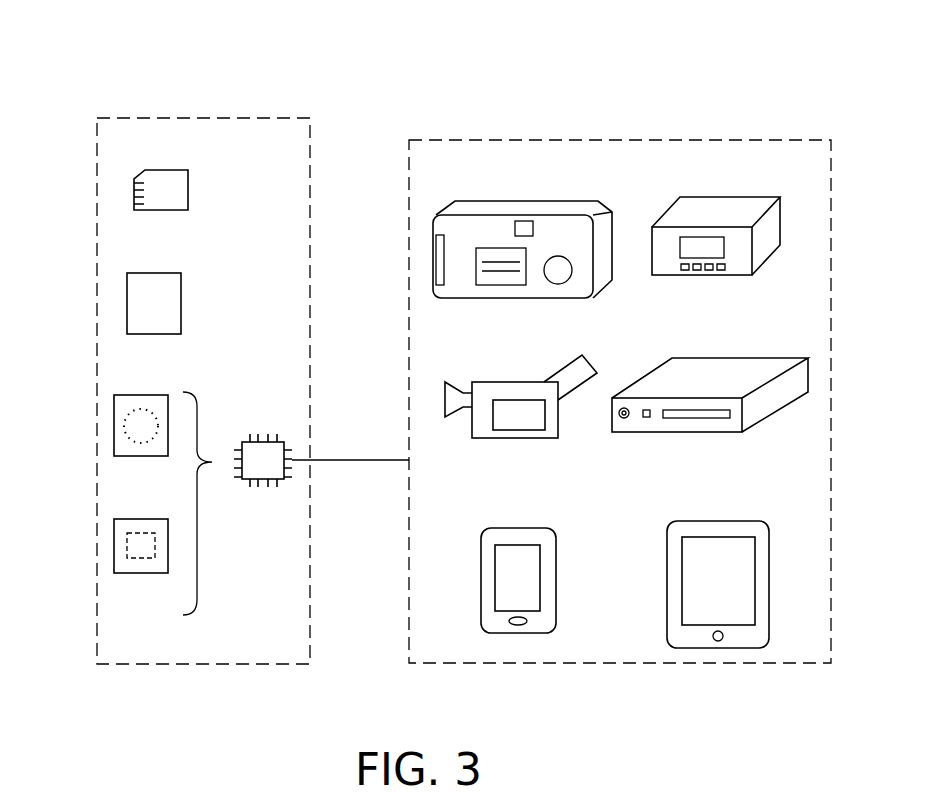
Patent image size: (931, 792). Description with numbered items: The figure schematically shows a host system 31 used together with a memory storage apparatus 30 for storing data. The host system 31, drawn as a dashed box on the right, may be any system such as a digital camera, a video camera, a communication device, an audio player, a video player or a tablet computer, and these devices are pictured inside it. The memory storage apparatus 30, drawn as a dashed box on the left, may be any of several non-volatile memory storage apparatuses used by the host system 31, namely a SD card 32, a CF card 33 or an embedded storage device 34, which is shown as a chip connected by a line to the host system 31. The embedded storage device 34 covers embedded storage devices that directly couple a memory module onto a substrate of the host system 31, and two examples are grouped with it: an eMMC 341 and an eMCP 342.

The memory storage apparatus 30 is at (195, 117).
The host system 31 is at (554, 138).
The SD card 32 is at (134, 195).
The CF card 33 is at (127, 305).
The embedded storage device 34 is at (263, 440).
The eMMC 341 is at (114, 427).
The eMCP 342 is at (114, 547).